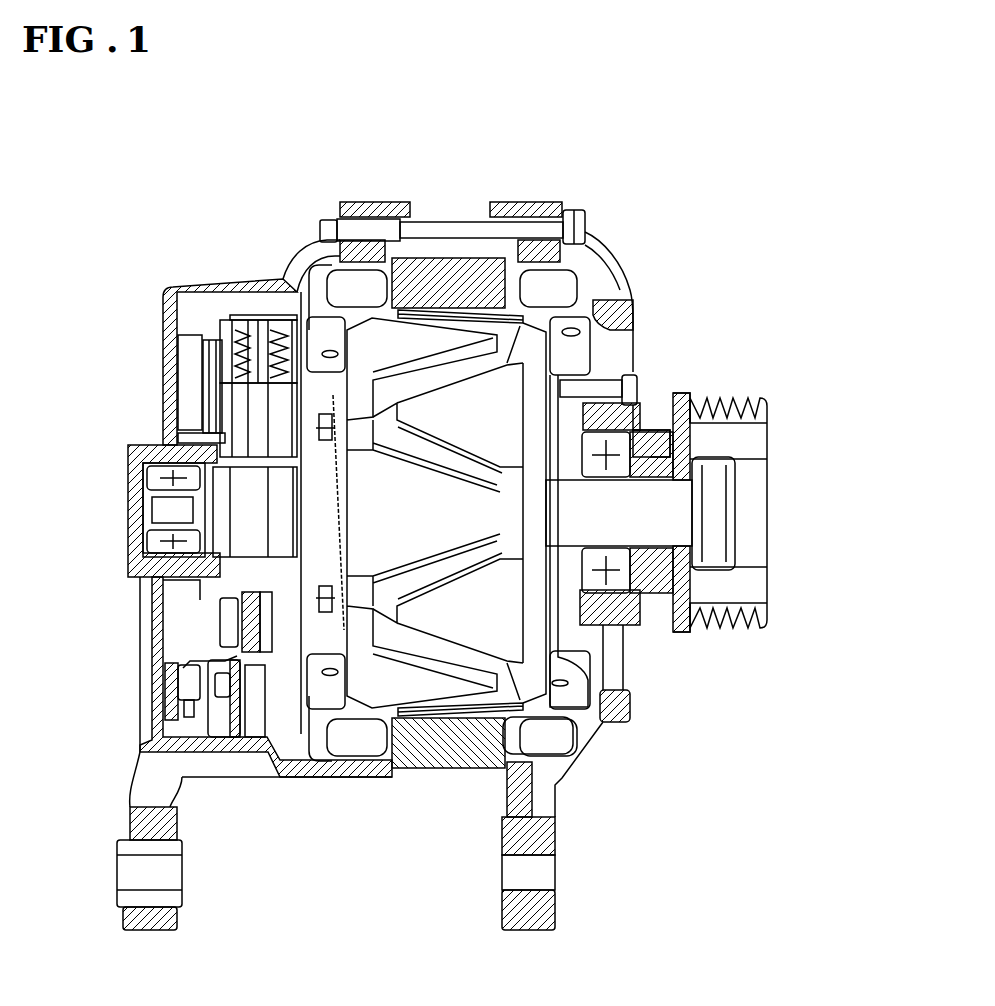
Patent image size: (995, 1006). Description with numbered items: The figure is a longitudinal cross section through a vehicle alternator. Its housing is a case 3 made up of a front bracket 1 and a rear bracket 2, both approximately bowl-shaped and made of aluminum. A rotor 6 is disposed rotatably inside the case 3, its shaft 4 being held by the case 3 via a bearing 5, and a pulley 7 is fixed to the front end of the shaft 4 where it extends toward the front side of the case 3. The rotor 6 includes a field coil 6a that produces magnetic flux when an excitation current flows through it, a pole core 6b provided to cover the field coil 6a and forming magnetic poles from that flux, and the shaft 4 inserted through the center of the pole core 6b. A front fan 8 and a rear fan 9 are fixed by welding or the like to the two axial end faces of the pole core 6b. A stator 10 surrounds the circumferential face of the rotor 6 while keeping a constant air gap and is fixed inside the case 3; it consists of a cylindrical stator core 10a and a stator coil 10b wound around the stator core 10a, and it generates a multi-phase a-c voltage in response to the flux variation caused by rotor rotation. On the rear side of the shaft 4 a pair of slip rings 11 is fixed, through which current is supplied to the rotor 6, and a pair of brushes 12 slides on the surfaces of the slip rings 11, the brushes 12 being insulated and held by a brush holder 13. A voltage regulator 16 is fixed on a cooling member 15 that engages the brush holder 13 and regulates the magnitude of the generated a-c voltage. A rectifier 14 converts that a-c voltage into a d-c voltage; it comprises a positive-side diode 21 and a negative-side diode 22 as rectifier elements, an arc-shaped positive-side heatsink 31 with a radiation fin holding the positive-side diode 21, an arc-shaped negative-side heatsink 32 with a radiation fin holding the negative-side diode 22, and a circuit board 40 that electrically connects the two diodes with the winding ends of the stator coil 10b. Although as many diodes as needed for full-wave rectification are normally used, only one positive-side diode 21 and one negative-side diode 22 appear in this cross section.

The front bracket 1 is at (630, 288).
The rear bracket 2 is at (197, 293).
The case 3 is at (606, 252).
The shaft 4 is at (663, 497).
The bearing 5 is at (612, 440).
The rotor 6 is at (437, 240).
The field coil 6a is at (413, 337).
The pole core 6b is at (472, 372).
The pulley 7 is at (727, 395).
The front fan 8 is at (573, 330).
The rear fan 9 is at (322, 333).
The stator 10 is at (479, 803).
The stator core 10a is at (420, 747).
The stator coil 10b is at (522, 740).
The slip rings 11 is at (206, 520).
The brushes 12 is at (277, 400).
The brush holder 13 is at (263, 318).
The rectifier 14 is at (199, 636).
The cooling member 15 is at (190, 372).
The voltage regulator 16 is at (213, 355).
The positive-side diode 21 is at (203, 598).
The negative-side diode 22 is at (163, 713).
The positive-side heatsink 31 is at (172, 580).
The negative-side heatsink 32 is at (163, 678).
The circuit board 40 is at (218, 720).